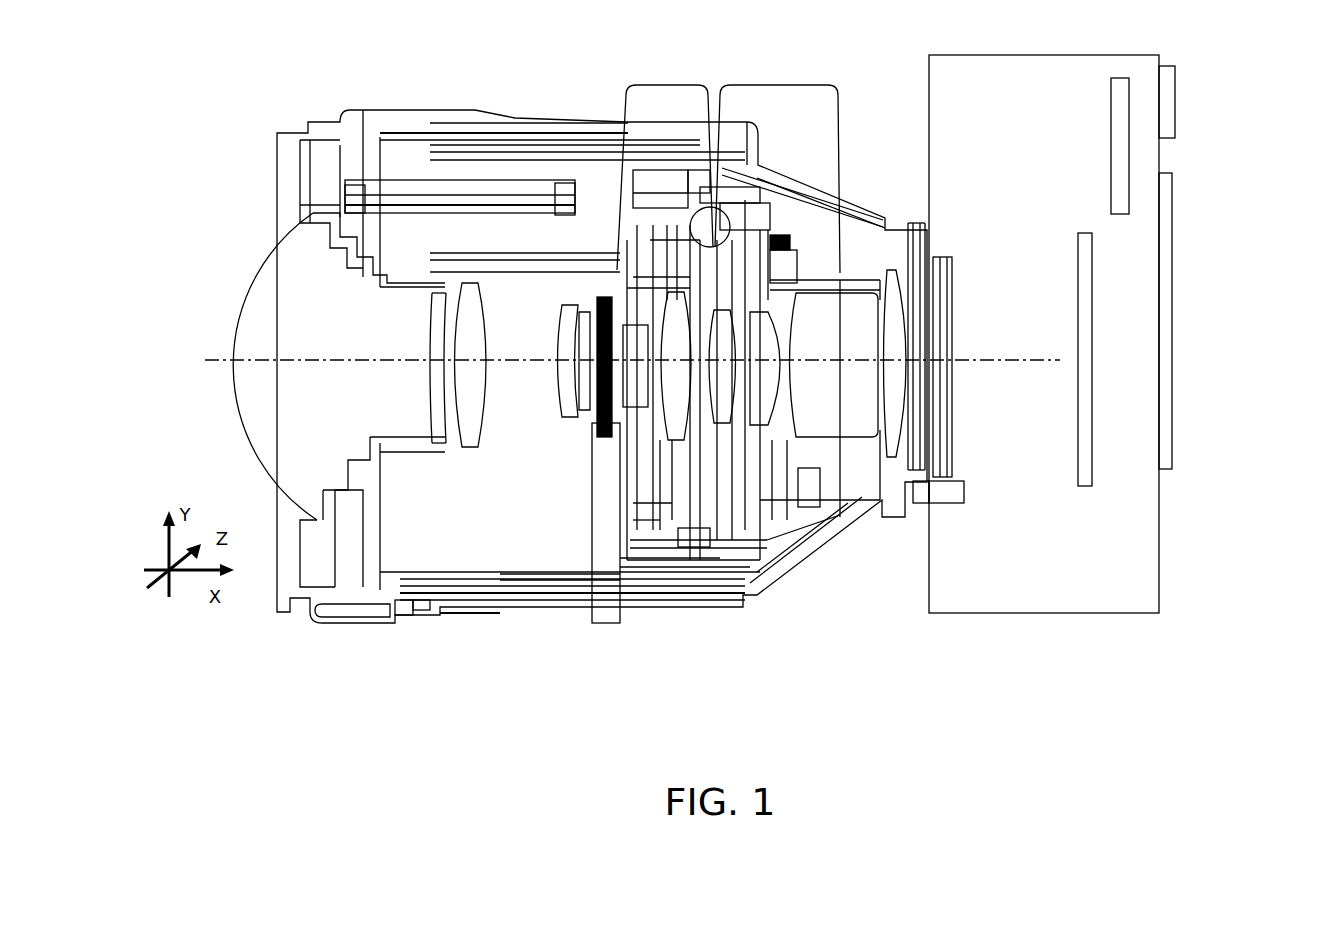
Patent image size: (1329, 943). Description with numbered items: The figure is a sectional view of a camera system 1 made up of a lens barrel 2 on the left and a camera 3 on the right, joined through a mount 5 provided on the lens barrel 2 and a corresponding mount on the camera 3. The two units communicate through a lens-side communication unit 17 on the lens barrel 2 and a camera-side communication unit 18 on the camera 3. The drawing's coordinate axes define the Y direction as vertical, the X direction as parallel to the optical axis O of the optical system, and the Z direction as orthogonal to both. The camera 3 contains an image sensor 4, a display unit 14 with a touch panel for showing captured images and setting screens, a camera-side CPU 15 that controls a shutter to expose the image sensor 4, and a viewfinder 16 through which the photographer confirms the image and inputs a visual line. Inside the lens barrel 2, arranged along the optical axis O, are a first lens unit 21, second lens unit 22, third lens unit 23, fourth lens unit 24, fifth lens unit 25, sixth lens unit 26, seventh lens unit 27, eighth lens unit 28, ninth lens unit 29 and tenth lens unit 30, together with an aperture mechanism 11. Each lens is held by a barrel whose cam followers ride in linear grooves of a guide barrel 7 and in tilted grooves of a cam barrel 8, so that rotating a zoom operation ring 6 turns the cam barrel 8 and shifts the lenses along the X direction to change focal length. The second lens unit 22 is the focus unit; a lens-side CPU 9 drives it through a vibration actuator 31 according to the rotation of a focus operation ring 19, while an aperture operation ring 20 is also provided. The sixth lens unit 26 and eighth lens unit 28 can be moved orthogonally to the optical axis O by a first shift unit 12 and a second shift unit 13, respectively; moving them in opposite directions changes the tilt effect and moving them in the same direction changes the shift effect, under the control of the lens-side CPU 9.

The camera system 1 is at (262, 670).
The lens barrel 2 is at (912, 635).
The camera 3 is at (928, 635).
The image sensor 4 is at (1087, 465).
The mount 5 is at (935, 263).
The zoom operation ring 6 is at (492, 615).
The guide barrel 7 is at (583, 575).
The cam barrel 8 is at (542, 580).
The lens-side CPU 9 is at (887, 243).
The aperture mechanism 11 is at (606, 539).
The first shift unit 12 is at (665, 165).
The second shift unit 13 is at (777, 167).
The display unit 14 is at (1172, 400).
The camera-side CPU 15 is at (1120, 138).
The viewfinder 16 is at (1175, 103).
The lens-side communication unit 17 is at (921, 493).
The camera-side communication unit 18 is at (947, 491).
The focus operation ring 19 is at (435, 612).
The aperture operation ring 20 is at (373, 615).
The first lens unit 21 is at (339, 366).
The second lens unit 22 is at (471, 365).
The third lens unit 23 is at (563, 355).
The fourth lens unit 24 is at (587, 390).
The fifth lens unit 25 is at (635, 366).
The sixth lens unit 26 is at (676, 366).
The seventh lens unit 27 is at (722, 366).
The eighth lens unit 28 is at (760, 408).
The ninth lens unit 29 is at (834, 365).
The tenth lens unit 30 is at (894, 363).
The vibration actuator 31 is at (433, 192).
The optical axis O is at (980, 350).